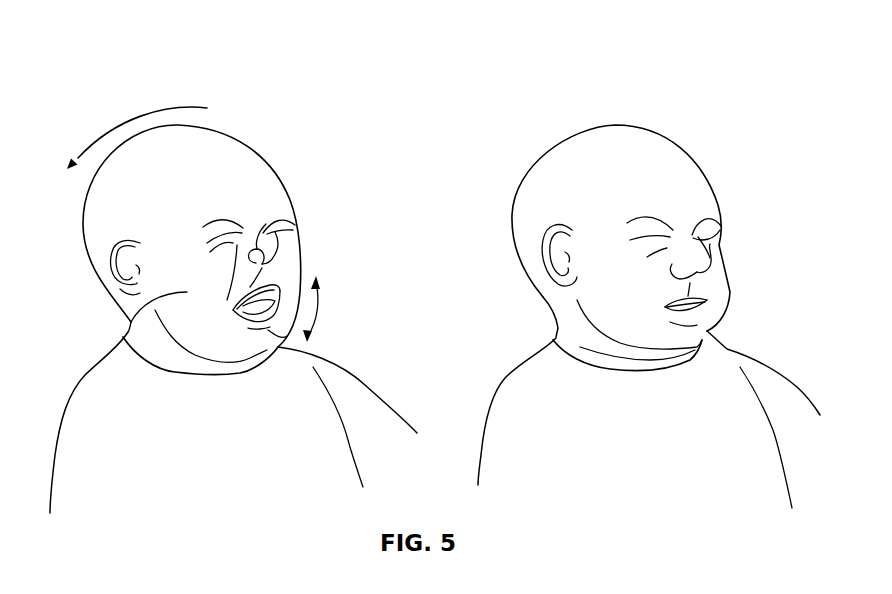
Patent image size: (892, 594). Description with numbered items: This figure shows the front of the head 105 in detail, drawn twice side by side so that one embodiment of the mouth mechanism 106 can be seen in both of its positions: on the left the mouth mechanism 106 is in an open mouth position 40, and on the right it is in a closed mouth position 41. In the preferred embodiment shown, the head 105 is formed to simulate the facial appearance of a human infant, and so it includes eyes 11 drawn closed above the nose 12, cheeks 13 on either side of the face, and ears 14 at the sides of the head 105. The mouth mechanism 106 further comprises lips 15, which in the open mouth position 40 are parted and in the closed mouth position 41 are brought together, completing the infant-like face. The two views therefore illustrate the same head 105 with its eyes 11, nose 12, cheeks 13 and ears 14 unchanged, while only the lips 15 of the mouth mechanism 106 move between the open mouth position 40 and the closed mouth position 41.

The head 105 is at (175, 72).
The eyes 11 is at (227, 220).
The nose 12 is at (260, 243).
The ears 14 is at (150, 290).
The cheeks 13 is at (130, 322).
The open mouth position 40 is at (215, 325).
The lips 15 is at (283, 290).
The mouth mechanism 106 is at (280, 295).
The closed mouth position 41 is at (714, 297).